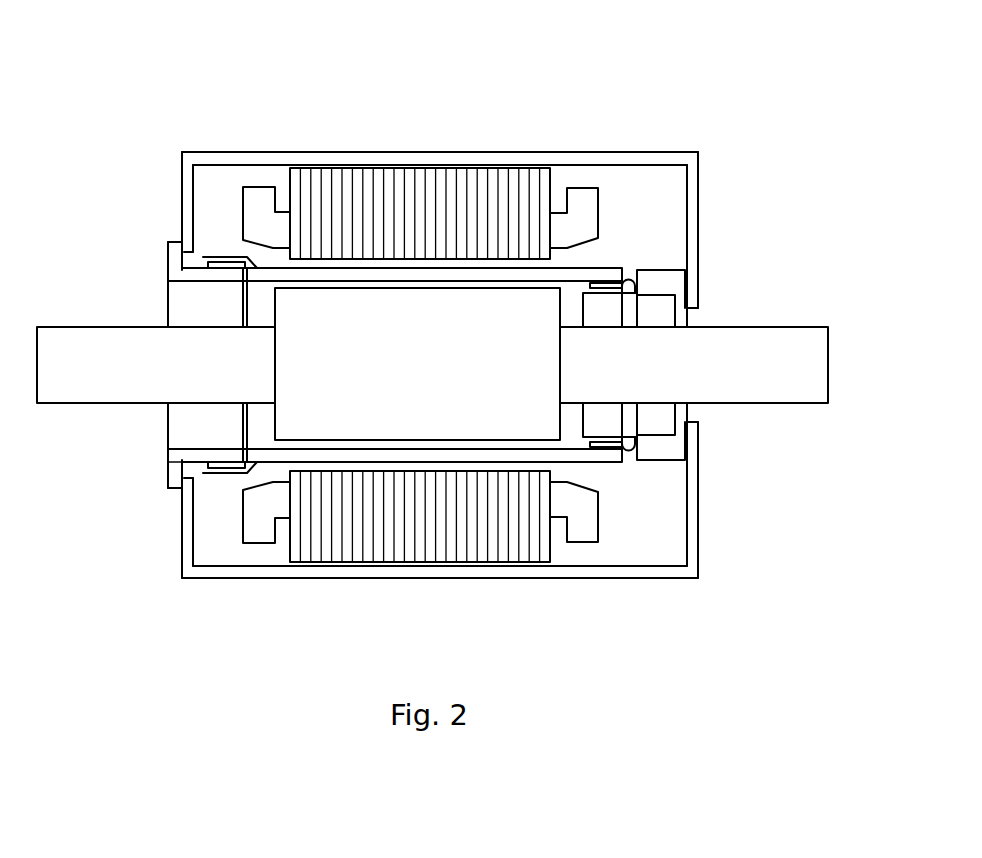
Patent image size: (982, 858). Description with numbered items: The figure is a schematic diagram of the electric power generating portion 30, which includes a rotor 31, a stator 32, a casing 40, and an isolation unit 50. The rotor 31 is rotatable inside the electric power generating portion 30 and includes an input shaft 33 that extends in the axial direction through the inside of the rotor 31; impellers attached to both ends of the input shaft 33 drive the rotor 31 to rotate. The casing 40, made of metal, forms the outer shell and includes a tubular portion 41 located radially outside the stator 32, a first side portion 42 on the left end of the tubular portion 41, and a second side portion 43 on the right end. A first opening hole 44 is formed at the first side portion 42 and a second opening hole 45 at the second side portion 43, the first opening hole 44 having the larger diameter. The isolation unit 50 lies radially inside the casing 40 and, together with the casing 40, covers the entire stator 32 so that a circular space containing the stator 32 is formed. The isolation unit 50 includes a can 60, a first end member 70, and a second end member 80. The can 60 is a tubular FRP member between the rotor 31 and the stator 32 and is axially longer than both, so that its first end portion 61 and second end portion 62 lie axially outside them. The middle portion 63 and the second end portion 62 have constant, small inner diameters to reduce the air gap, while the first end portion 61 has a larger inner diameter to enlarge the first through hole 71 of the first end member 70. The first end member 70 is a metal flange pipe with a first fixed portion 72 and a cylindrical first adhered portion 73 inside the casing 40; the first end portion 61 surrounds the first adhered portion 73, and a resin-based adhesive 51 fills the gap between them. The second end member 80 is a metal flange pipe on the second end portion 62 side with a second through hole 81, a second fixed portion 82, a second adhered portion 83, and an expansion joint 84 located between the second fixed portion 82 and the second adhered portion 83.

The electric power generating portion 30 is at (709, 64).
The rotor 31 is at (360, 432).
The stator 32 is at (485, 170).
The input shaft 33 is at (63, 345).
The casing 40 is at (376, 143).
The tubular portion 41 is at (263, 160).
The first side portion 42 is at (188, 178).
The second side portion 43 is at (694, 203).
The first opening hole 44 is at (183, 260).
The second opening hole 45 is at (693, 318).
The isolation unit 50 is at (154, 478).
The adhesive 51 is at (225, 253).
The can 60 is at (419, 468).
The first end portion 61 is at (233, 475).
The second end portion 62 is at (598, 452).
The middle portion 63 is at (470, 452).
The first end member 70 is at (180, 440).
The first through hole 71 is at (185, 447).
The first fixed portion 72 is at (175, 487).
The first adhered portion 73 is at (217, 470).
The second end member 80 is at (675, 455).
The second through hole 81 is at (683, 418).
The second fixed portion 82 is at (652, 455).
The second adhered portion 83 is at (606, 440).
The expansion joint 84 is at (628, 452).